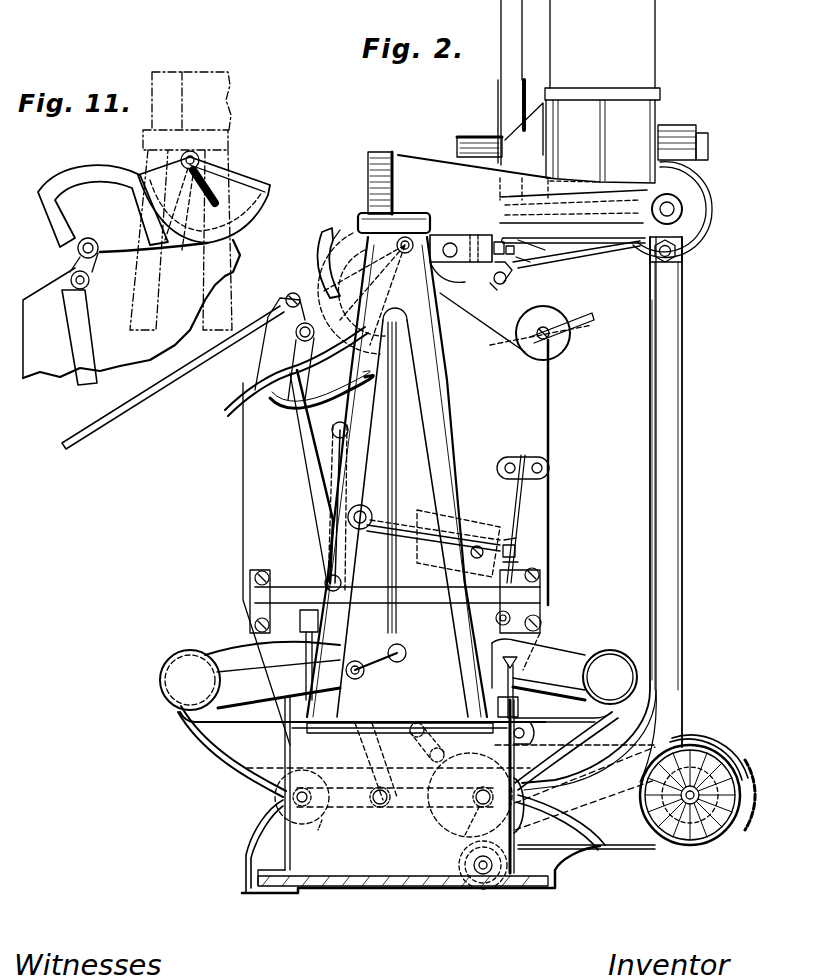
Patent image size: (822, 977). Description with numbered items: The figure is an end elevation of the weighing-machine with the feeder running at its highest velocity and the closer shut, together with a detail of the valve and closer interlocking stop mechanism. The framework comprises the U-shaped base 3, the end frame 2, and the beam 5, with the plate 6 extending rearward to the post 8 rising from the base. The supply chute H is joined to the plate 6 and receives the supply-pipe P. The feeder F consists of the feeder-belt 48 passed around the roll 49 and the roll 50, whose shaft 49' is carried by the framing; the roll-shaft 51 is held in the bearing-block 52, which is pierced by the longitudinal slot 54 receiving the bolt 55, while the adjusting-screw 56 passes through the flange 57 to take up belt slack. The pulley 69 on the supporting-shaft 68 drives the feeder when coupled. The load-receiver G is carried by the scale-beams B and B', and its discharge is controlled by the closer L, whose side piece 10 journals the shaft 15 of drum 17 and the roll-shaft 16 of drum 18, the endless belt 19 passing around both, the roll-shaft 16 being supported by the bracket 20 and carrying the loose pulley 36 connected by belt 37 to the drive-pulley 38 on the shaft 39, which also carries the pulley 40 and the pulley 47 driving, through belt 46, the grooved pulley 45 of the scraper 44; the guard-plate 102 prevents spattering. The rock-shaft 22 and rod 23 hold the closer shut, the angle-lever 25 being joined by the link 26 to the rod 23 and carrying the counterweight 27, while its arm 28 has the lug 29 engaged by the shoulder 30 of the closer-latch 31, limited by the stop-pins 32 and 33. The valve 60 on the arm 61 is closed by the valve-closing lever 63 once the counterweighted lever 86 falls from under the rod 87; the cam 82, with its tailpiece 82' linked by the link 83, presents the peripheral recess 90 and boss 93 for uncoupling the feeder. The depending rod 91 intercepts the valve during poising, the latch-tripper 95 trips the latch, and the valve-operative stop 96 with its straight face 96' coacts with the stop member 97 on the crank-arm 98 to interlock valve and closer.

In FIG. 2, the supply-pipe P is at (602, 44).
In FIG. 2, the supply chute H is at (640, 130).
In FIG. 2, the pulley 69 is at (485, 168).
In FIG. 2, the supporting-shaft 68 is at (708, 148).
In FIG. 2, the roll 50 is at (683, 207).
In FIG. 2, the shaft 49' is at (575, 208).
In FIG. 2, the roll 49 is at (410, 267).
In FIG. 2, the feeder-belt 48 is at (640, 248).
In FIG. 2, the post 8 is at (683, 457).
In FIG. 2, the feeder F is at (573, 255).
In FIG. 2, the boss 93 is at (548, 262).
In FIG. 2, the peripheral recess 90 is at (540, 248).
In FIG. 2, the cam 82 is at (542, 272).
In FIG. 2, the tailpiece 82' is at (499, 300).
In FIG. 2, the plate 6 is at (514, 182).
In FIG. 2, the beam 5 is at (380, 155).
In FIG. 2, the roll-shaft 51 is at (448, 233).
In FIG. 2, the bearing-block 52 is at (456, 244).
In FIG. 2, the longitudinal slot 54 is at (503, 240).
In FIG. 2, the bolt 55 is at (478, 264).
In FIG. 2, the adjusting-screw 56 is at (512, 268).
In FIG. 2, the flange 57 is at (506, 283).
In FIG. 2, the link 83 is at (463, 305).
In FIG. 2, the valve-closing lever 63 is at (530, 348).
In FIG. 2, the end frame 2 is at (450, 462).
In FIG. 2, the rod 87 is at (395, 432).
In FIG. 2, the counterweighted lever 86 is at (375, 665).
In FIG. 11, the valve 60 is at (152, 175).
In FIG. 2, the valve 60 is at (350, 252).
In FIG. 11, the arm 61 is at (193, 152).
In FIG. 11, the valve-operative stop 96 is at (189, 261).
In FIG. 2, the valve-operative stop 96 is at (311, 263).
In FIG. 11, the straight face 96' is at (154, 261).
In FIG. 2, the straight face 96' is at (324, 220).
In FIG. 11, the crank-arm 98 is at (90, 282).
In FIG. 2, the crank-arm 98 is at (303, 300).
In FIG. 11, the rock-shaft 22 is at (78, 250).
In FIG. 2, the rock-shaft 22 is at (296, 336).
In FIG. 2, the depending rod 91 is at (160, 412).
In FIG. 11, the latch-tripper 95 is at (212, 183).
In FIG. 2, the latch-tripper 95 is at (232, 405).
In FIG. 11, the stop member 97 is at (68, 178).
In FIG. 2, the stop member 97 is at (290, 412).
In FIG. 11, the rod 23 is at (82, 370).
In FIG. 2, the rod 23 is at (307, 482).
In FIG. 2, the link 26 is at (332, 458).
In FIG. 11, the load-receiver G is at (131, 309).
In FIG. 2, the load-receiver G is at (255, 515).
In FIG. 2, the angle-lever 25 is at (372, 520).
In FIG. 2, the counterweight 27 is at (470, 522).
In FIG. 2, the stop-pin 32 is at (509, 462).
In FIG. 2, the stop-pin 33 is at (537, 462).
In FIG. 2, the arm 28 is at (518, 516).
In FIG. 2, the shoulder 30 is at (518, 542).
In FIG. 2, the lug 29 is at (516, 550).
In FIG. 2, the closer-latch 31 is at (518, 563).
In FIG. 2, the scale-beam B is at (250, 667).
In FIG. 2, the scale-beam B' is at (564, 664).
In FIG. 2, the guard-plate 102 is at (247, 833).
In FIG. 2, the base 3 is at (345, 873).
In FIG. 2, the closer L is at (451, 798).
In FIG. 2, the endless belt 19 is at (345, 768).
In FIG. 2, the bracket 20 is at (432, 770).
In FIG. 2, the shaft 15 is at (302, 808).
In FIG. 2, the drum 17 is at (330, 826).
In FIG. 2, the side piece 10 is at (417, 808).
In FIG. 2, the roll-shaft 16 is at (478, 812).
In FIG. 2, the drum 18 is at (455, 815).
In FIG. 2, the scraper 44 is at (472, 873).
In FIG. 2, the grooved pulley 45 is at (500, 878).
In FIG. 2, the belt 37 is at (620, 743).
In FIG. 2, the loose pulley 36 is at (532, 803).
In FIG. 2, the belt 46 is at (612, 852).
In FIG. 2, the drive-pulley 38 is at (722, 752).
In FIG. 2, the shaft 39 is at (700, 810).
In FIG. 2, the pulley 40 is at (700, 738).
In FIG. 2, the pulley 47 is at (760, 780).